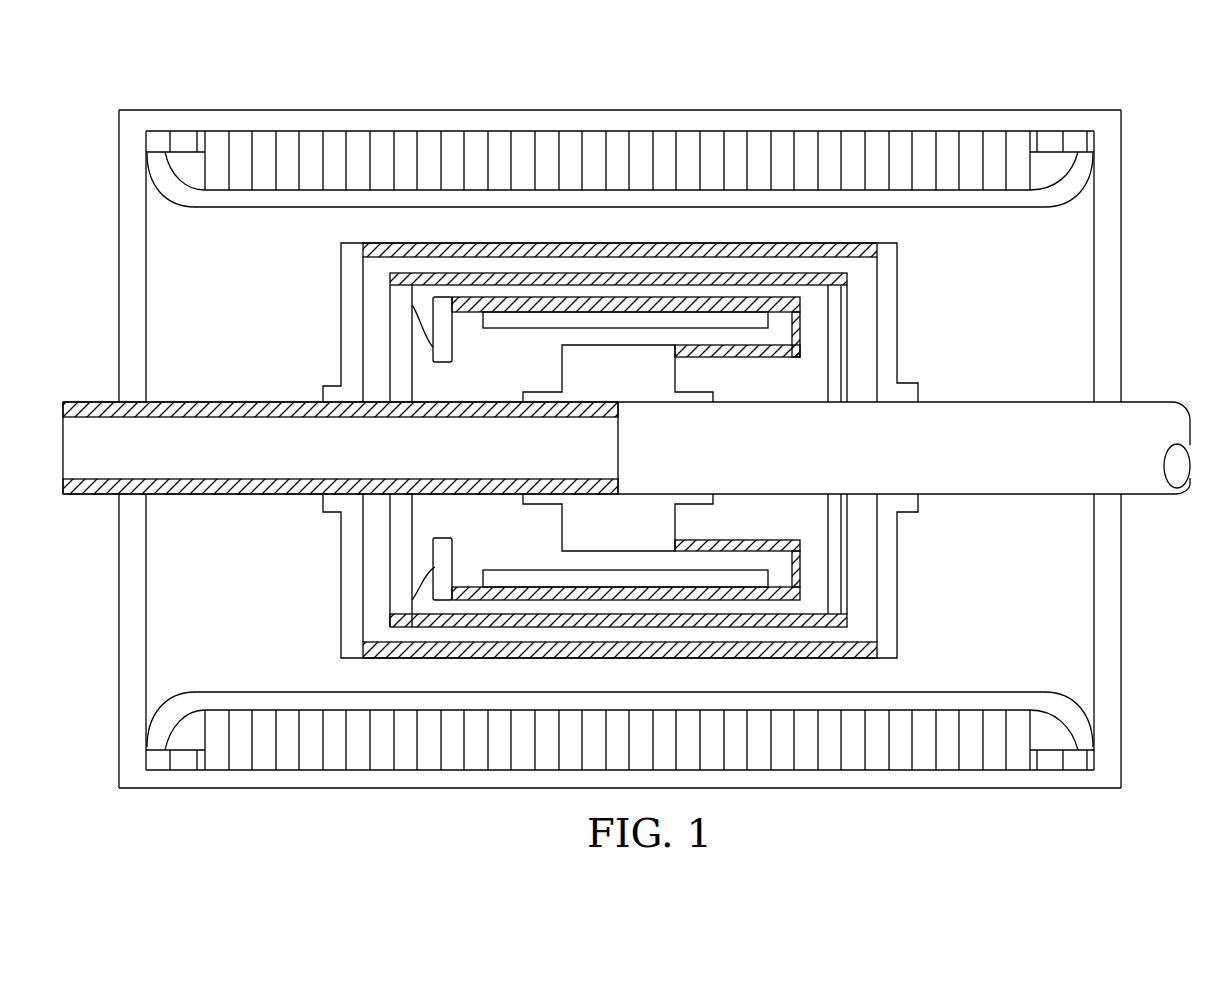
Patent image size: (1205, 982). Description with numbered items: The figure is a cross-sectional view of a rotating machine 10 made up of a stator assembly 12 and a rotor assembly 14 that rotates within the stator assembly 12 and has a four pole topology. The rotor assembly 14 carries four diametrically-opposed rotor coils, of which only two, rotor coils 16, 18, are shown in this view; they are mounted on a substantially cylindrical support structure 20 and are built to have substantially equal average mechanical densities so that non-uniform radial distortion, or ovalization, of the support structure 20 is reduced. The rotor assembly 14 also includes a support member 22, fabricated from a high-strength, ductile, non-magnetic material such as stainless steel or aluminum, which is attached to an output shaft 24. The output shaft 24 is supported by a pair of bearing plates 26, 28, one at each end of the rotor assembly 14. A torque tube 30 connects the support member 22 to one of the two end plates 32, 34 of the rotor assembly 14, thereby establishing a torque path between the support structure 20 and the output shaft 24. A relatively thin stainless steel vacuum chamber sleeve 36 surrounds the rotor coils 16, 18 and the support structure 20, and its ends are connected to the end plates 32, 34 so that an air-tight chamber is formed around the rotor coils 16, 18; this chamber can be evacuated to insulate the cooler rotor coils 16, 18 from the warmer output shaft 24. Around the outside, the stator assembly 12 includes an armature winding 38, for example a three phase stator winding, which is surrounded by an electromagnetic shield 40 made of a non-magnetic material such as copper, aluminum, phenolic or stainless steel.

The rotating machine 10 is at (62, 73).
The stator assembly 12 is at (889, 99).
The rotor assembly 14 is at (347, 563).
The rotor coil 16 is at (703, 318).
The rotor coil 18 is at (658, 575).
The support structure 20 is at (770, 302).
The support member 22 is at (566, 375).
The output shaft 24 is at (953, 423).
The bearing plate 26 is at (1113, 238).
The bearing plate 28 is at (137, 297).
The torque tube 30 is at (765, 535).
The end plate 32 is at (843, 582).
The end plate 34 is at (398, 333).
The vacuum chamber sleeve 36 is at (507, 280).
The armature winding 38 is at (972, 200).
The electromagnetic shield 40 is at (518, 110).